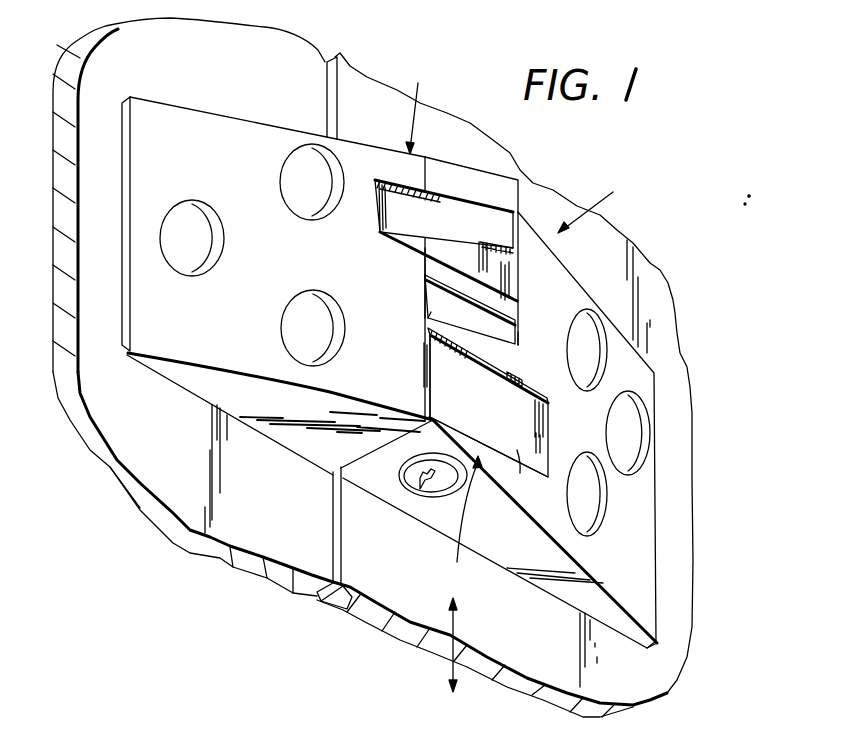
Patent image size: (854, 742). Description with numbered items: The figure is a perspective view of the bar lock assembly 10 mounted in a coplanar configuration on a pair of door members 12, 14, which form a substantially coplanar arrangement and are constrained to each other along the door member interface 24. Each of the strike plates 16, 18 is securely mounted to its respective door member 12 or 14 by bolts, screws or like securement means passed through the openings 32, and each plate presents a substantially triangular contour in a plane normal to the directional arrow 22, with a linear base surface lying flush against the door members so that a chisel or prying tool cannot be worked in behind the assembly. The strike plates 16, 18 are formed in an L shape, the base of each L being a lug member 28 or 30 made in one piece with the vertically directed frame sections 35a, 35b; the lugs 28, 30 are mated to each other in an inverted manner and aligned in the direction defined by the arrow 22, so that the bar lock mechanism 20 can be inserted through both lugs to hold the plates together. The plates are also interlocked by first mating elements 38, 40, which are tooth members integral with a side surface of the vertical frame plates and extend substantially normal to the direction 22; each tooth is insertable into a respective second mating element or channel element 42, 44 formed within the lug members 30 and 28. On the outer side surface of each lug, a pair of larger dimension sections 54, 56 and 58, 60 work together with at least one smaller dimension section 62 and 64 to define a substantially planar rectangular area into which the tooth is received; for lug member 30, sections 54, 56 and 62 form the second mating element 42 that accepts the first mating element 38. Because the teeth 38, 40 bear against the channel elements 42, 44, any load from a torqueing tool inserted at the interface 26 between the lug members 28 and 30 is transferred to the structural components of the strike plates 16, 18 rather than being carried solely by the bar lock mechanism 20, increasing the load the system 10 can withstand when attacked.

The bar lock assembly 10 is at (601, 204).
The door member 12 is at (247, 37).
The door member 14 is at (365, 80).
The strike plate 16 is at (147, 323).
The strike plate 18 is at (648, 547).
The bar lock mechanism 20 is at (430, 493).
The directional arrow 22 is at (458, 626).
The door member interface 24 is at (327, 62).
The interface 26 is at (500, 327).
The lug member 28 is at (427, 103).
The lug member 30 is at (459, 524).
The openings 32 is at (297, 302).
The vertically directed frame section 35a is at (633, 380).
The vertically directed frame section 35b is at (158, 117).
The first mating element 38 is at (428, 353).
The first mating element 40 is at (513, 277).
The second mating element 42 is at (543, 437).
The second mating element 44 is at (468, 243).
The larger dimension section 54 is at (503, 345).
The larger dimension section 56 is at (501, 440).
The larger dimension section 58 is at (480, 292).
The larger dimension section 60 is at (480, 192).
The smaller dimension section 62 is at (430, 337).
The smaller dimension section 64 is at (497, 267).